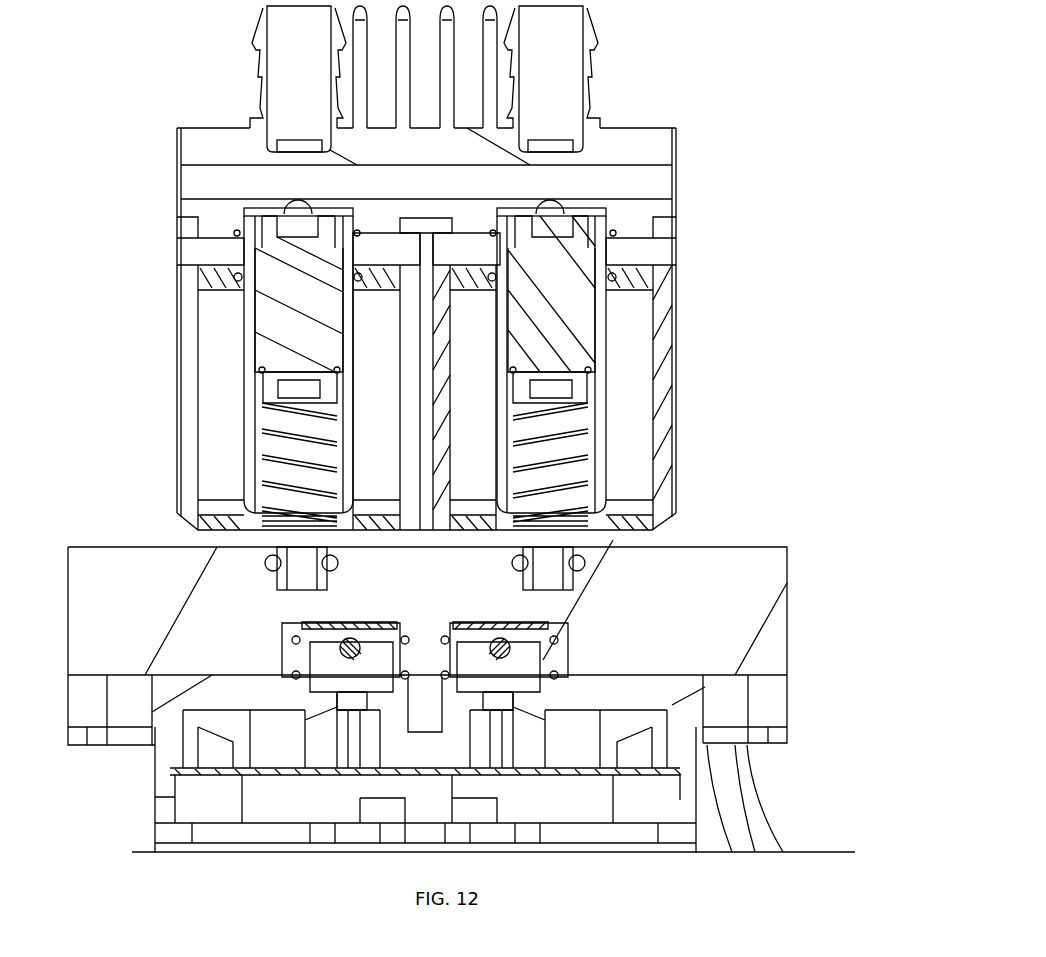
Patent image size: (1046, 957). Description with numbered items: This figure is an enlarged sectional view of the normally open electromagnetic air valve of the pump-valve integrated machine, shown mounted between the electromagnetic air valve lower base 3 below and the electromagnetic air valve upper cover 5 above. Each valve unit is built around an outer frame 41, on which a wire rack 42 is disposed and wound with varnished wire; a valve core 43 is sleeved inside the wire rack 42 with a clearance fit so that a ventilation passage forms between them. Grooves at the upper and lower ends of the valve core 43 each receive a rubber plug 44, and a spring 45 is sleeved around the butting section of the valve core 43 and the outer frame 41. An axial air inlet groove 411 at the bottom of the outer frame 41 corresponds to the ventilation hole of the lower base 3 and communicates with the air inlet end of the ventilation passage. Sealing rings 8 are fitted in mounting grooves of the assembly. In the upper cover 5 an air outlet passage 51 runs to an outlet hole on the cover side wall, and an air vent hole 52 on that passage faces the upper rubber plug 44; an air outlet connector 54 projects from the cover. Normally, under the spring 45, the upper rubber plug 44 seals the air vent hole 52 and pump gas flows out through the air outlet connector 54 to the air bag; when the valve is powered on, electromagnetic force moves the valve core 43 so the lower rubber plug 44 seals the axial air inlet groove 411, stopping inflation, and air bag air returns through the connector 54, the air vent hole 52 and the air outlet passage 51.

The electromagnetic air valve lower base 3 is at (730, 595).
The electromagnetic air valve upper cover 5 is at (603, 143).
The sealing ring 8 is at (263, 565).
The outer frame 41 is at (190, 443).
The wire rack 42 is at (250, 378).
The valve core 43 is at (272, 310).
The rubber plug 44 is at (607, 212).
The spring 45 is at (592, 463).
The air outlet passage 51 is at (633, 180).
The air vent hole 52 is at (287, 207).
The air outlet connector 54 is at (556, 88).
The axial air inlet groove 411 is at (577, 610).